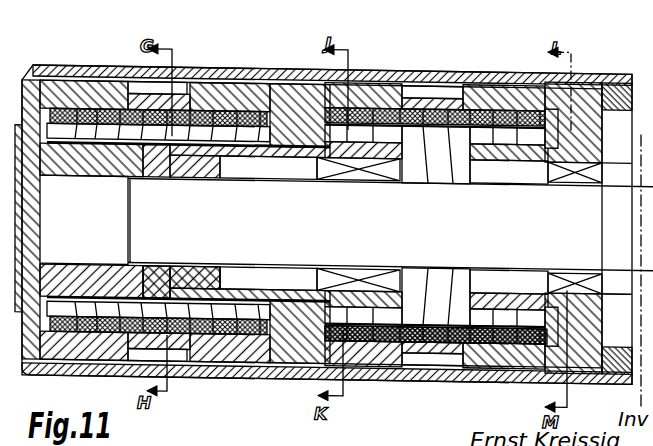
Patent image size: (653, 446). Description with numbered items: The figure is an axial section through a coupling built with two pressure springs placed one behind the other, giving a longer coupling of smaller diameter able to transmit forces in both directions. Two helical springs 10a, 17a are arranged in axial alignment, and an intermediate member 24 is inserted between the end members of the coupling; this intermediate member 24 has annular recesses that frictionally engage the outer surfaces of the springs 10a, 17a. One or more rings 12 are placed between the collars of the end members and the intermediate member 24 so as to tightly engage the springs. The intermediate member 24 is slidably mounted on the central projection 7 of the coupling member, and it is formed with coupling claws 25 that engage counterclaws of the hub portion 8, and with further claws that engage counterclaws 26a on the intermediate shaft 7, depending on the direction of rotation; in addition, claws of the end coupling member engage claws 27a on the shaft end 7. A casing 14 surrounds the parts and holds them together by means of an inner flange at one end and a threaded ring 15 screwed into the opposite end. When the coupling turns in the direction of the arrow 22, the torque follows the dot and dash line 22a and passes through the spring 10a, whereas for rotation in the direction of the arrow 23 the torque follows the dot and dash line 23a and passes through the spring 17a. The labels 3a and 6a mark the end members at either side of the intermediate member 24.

The end cap 3a is at (56, 97).
The helical spring 10a is at (112, 99).
The ring 12 is at (167, 134).
The intermediate member 24 is at (284, 136).
The helical spring 17a is at (488, 120).
The casing 14 is at (541, 76).
The end block 6a is at (587, 104).
The threaded ring 15 is at (620, 101).
The arrow indicating direction of torque 22 is at (53, 92).
The arrow indicating direction of rotation 23 is at (53, 144).
The dot and dash line 22a is at (343, 155).
The dot and dash line 23a is at (573, 150).
The hub portion 8 is at (128, 336).
The coupling claw 25 is at (165, 283).
The counterclaw 26a is at (358, 285).
The central projection 7 is at (425, 234).
The claw 27a is at (578, 324).